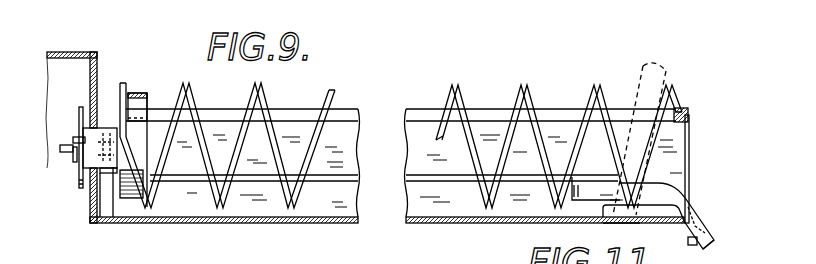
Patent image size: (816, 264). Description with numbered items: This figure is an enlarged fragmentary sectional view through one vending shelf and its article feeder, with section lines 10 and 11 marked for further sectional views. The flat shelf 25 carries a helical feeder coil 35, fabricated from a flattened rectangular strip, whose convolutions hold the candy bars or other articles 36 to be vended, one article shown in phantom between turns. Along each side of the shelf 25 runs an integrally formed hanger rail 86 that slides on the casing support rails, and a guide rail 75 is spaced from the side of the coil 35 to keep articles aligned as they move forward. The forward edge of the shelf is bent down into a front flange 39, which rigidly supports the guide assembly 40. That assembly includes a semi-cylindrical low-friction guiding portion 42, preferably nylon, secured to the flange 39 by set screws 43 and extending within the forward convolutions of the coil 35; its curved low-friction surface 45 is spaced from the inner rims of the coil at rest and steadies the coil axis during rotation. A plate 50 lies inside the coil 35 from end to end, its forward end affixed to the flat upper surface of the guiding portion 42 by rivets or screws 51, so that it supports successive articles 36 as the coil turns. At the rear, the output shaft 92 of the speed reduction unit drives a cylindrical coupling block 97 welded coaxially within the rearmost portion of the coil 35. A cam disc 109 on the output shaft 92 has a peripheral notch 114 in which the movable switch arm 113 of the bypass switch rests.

The section line 10- 10 is at (107, 17).
The section line 11- 11 is at (63, 47).
The shelf 25 is at (332, 223).
The helical feeder coil 35 is at (449, 96).
The article 36 is at (638, 78).
The front flange 39 is at (703, 243).
The guide assembly 40 is at (701, 207).
The guiding portion 42 is at (672, 193).
The set screw 43 is at (693, 245).
The low-friction surface 45 is at (622, 223).
The plate 50 is at (407, 178).
The rivet or screw 51 is at (592, 197).
The guide rail 75 is at (353, 134).
The hanger rail 86 is at (353, 112).
The output shaft 92 is at (60, 145).
The coupling block 97 is at (131, 198).
The cam disc 109 is at (80, 124).
The switch arm 113 is at (74, 149).
The peripheral notch 114 is at (79, 138).